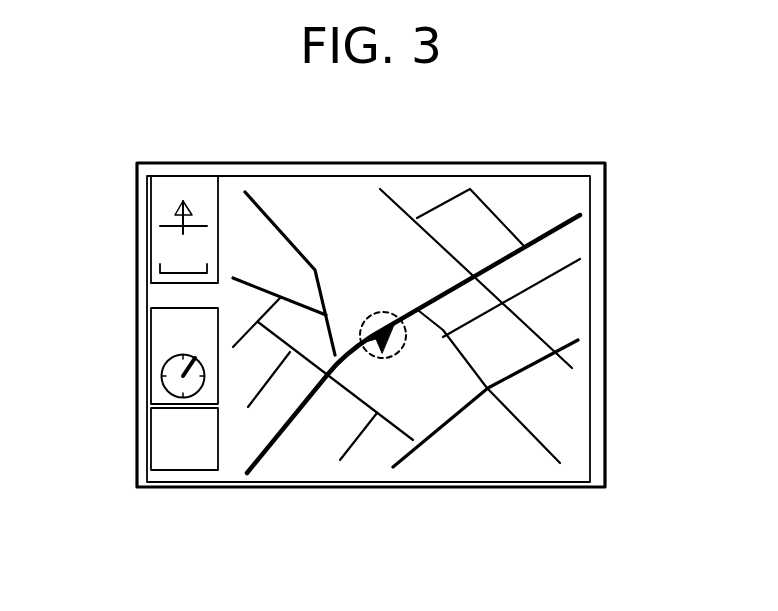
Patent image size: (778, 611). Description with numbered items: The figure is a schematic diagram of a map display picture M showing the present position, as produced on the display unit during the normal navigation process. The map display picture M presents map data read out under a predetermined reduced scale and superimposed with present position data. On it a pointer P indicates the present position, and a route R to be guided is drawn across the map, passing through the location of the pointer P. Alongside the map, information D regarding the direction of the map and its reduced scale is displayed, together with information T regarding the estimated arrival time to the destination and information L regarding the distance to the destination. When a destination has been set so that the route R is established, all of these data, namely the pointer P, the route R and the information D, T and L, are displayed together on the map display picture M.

The information regarding a direction of the map and the reduced-scale D is at (158, 235).
The information regarding estimated arrival time to a destination T is at (158, 353).
The information regarding a distance to the destination L is at (158, 445).
The route to be guided R is at (552, 222).
The map display picture M is at (580, 323).
The pointer for indicating the present position P is at (391, 358).